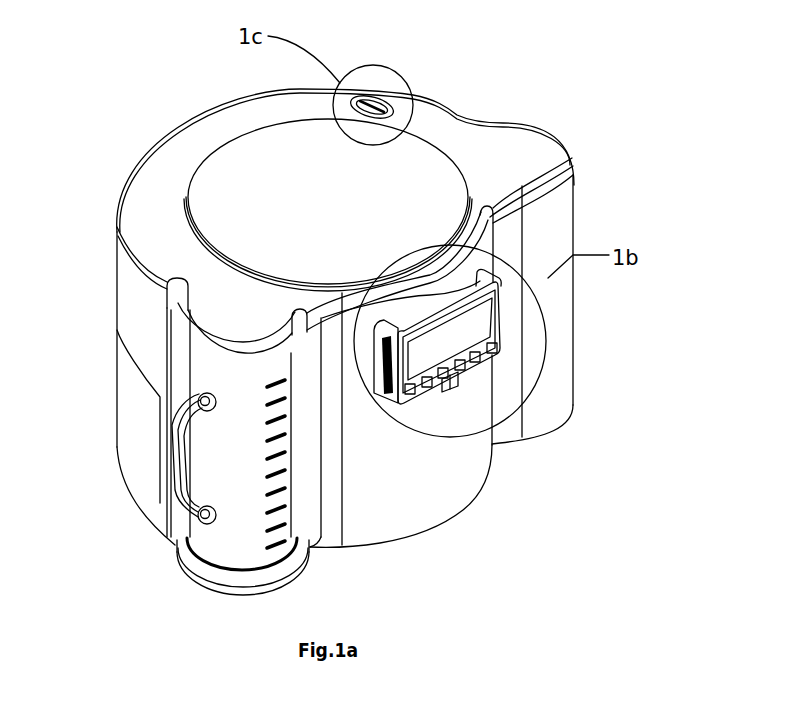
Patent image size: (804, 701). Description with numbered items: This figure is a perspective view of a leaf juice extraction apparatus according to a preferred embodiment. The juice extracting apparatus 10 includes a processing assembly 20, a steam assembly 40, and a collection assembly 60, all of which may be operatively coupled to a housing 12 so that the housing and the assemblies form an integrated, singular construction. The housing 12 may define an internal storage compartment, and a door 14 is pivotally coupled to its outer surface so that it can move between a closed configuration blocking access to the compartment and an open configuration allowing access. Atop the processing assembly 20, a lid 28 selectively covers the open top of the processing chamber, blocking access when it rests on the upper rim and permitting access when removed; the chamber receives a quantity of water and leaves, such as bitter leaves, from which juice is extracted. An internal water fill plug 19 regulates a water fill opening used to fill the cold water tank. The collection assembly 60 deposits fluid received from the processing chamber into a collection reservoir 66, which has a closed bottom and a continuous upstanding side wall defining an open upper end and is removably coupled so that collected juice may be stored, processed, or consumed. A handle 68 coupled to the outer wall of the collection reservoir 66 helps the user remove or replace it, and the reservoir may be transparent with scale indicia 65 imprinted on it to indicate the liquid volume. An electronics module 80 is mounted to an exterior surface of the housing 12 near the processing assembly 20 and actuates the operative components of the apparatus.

The juice extracting apparatus 10 is at (522, 92).
The housing 12 is at (95, 303).
The door 14 is at (128, 408).
The internal water fill plug 19 is at (361, 96).
The processing assembly 20 is at (115, 149).
The lid 28 is at (262, 147).
The steam assembly 40 is at (608, 204).
The collection assembly 60 is at (309, 477).
The scale indicia 65 is at (273, 545).
The collection reservoir 66 is at (227, 545).
The handle 68 is at (183, 488).
The electronics module 80 is at (482, 384).